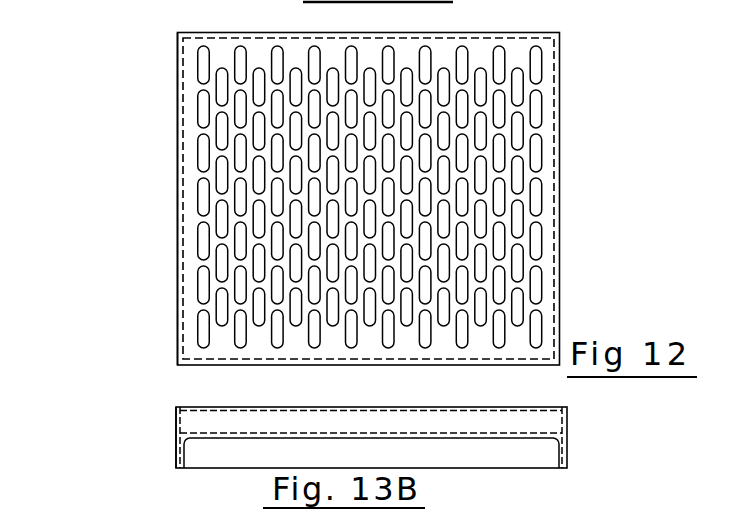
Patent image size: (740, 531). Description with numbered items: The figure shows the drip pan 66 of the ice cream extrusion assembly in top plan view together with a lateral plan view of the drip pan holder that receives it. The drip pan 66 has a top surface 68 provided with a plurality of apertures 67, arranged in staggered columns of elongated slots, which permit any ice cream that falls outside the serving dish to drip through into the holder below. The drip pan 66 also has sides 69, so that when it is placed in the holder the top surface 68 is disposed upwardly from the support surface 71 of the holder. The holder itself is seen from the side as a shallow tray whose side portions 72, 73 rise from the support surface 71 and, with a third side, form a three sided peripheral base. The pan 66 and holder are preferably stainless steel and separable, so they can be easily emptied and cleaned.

In FIG. 12, the drip pan 66 is at (426, 199).
In FIG. 12, the apertures 67 is at (369, 197).
In FIG. 12, the top surface 68 is at (420, 179).
In FIG. 12, the sides 69 is at (102, 199).
In FIG. 13B, the support surface 71 is at (435, 464).
In FIG. 13B, the side portion 72 is at (111, 417).
In FIG. 13B, the side portion 73 is at (445, 426).